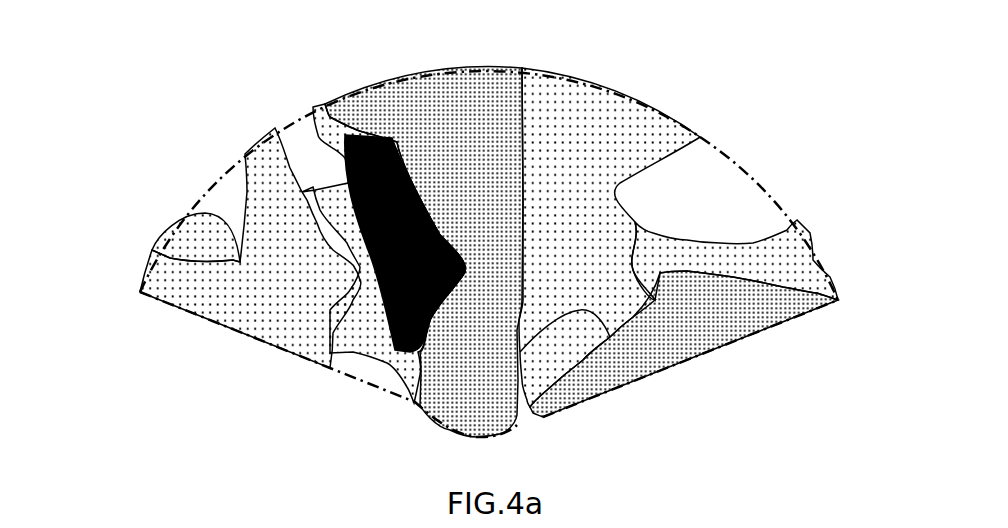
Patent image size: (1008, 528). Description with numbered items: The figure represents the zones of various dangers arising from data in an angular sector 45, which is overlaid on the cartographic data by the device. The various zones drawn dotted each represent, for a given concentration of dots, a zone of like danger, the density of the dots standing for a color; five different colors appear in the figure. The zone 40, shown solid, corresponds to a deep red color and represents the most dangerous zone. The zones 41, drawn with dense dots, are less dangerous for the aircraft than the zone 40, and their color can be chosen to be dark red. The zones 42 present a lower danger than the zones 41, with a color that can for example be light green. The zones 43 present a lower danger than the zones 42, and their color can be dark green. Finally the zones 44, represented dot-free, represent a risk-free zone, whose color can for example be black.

The zone 40 is at (390, 355).
The zones 41 is at (410, 103).
The zones 42 is at (810, 263).
The zones 43 is at (613, 117).
The zones 44 is at (733, 197).
The angular sector 45 is at (160, 148).